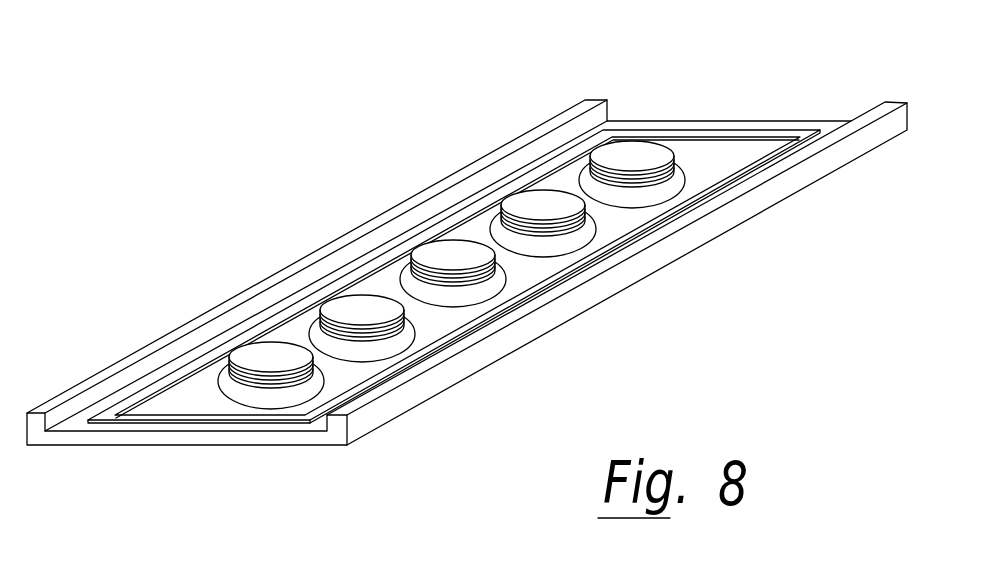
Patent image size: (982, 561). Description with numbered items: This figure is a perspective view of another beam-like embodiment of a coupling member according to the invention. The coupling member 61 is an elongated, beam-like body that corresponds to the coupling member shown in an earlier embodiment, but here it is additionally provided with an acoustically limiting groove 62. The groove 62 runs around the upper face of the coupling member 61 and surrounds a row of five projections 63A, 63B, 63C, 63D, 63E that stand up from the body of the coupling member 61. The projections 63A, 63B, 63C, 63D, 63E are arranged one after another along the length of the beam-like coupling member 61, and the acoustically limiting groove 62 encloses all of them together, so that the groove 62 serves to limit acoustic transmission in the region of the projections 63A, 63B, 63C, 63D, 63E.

The coupling member 61 is at (273, 447).
The acoustically limiting groove 62 is at (760, 133).
The projection 63A is at (252, 355).
The projection 63B is at (343, 303).
The projection 63C is at (432, 249).
The projection 63D is at (525, 200).
The projection 63E is at (607, 150).